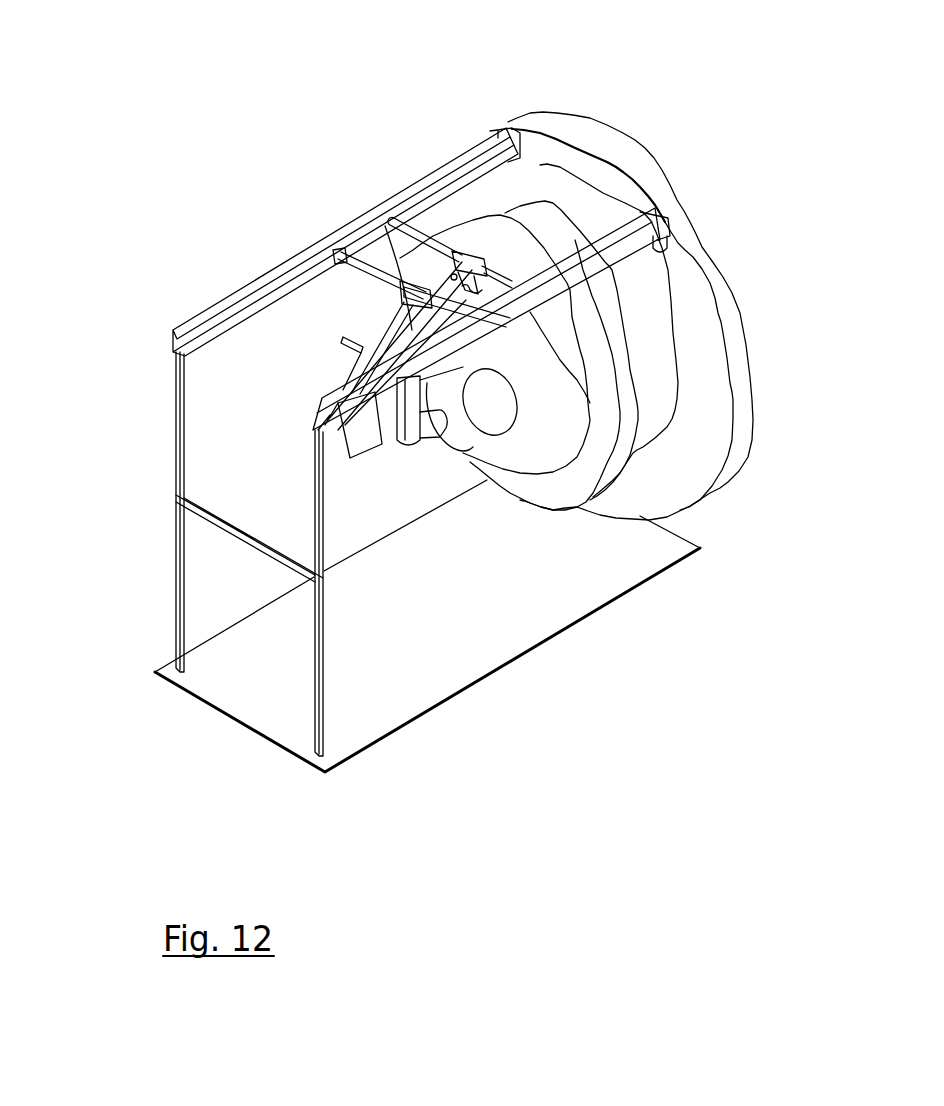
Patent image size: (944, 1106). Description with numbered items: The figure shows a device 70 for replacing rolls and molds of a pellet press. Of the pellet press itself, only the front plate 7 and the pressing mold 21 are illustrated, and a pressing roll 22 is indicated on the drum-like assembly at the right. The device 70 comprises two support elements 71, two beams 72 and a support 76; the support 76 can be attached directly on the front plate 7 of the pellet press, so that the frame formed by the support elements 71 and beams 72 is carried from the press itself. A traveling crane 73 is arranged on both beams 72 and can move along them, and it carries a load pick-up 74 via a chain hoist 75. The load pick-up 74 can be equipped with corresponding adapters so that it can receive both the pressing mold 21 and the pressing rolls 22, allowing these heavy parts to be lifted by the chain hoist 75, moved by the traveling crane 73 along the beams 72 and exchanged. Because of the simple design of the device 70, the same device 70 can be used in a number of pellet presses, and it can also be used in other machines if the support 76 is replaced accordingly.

The device 70 is at (244, 128).
The support elements 71 is at (180, 590).
The beams 72 is at (218, 308).
The traveling crane 73 is at (392, 224).
The load pick-up 74 is at (404, 448).
The chain hoist 75 is at (352, 438).
The support 76 is at (608, 144).
The front plate 7 is at (743, 398).
The pressing mold 21 is at (637, 312).
The pressing roll 22 is at (480, 420).